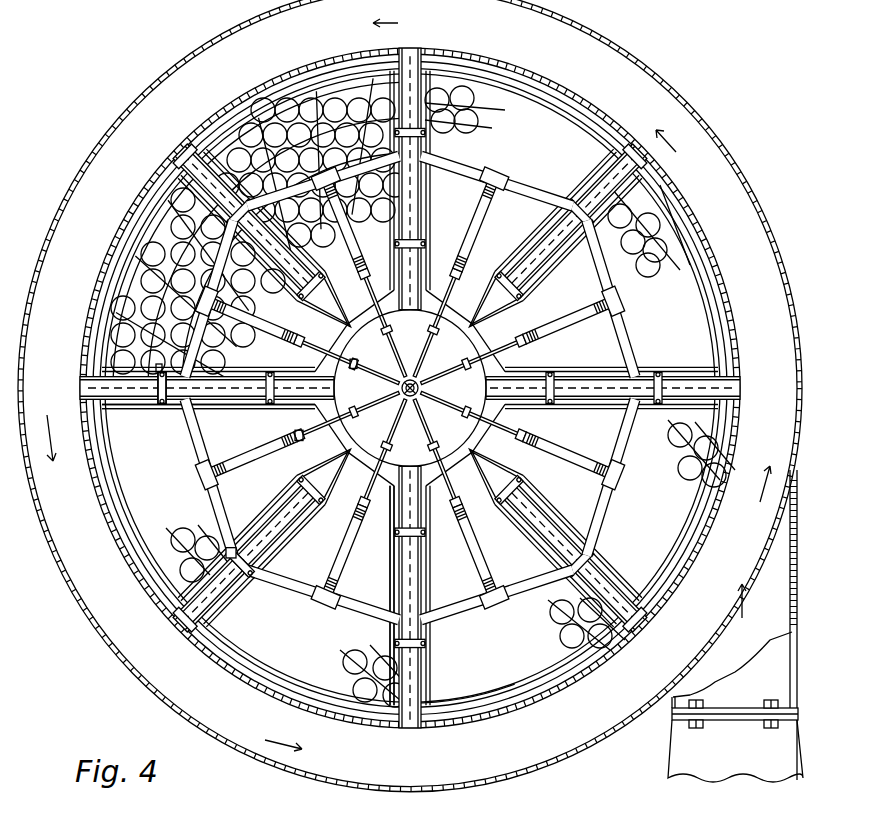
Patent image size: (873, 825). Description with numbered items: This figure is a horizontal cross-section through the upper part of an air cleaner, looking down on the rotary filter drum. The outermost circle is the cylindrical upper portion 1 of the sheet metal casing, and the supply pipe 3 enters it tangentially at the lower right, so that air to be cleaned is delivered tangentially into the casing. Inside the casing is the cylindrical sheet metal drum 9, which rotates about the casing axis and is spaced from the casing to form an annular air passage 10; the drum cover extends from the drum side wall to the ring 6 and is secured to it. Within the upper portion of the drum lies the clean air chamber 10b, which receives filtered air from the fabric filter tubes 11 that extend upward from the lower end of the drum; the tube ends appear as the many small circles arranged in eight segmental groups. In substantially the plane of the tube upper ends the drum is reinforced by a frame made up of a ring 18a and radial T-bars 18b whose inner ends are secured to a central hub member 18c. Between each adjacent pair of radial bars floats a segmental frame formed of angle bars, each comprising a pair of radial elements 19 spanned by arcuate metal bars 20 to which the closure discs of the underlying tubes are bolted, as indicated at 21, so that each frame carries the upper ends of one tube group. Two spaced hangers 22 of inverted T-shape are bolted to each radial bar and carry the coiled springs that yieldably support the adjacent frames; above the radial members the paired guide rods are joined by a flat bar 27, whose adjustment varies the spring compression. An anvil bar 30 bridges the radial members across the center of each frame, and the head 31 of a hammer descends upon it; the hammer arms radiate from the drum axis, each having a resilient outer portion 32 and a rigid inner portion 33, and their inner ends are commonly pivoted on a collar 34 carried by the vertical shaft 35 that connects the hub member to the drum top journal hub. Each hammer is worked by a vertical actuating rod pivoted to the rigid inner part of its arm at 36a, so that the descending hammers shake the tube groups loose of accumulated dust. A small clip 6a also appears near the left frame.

The cylindrical upper portion of casing 1 is at (124, 674).
The supply pipe 3 is at (735, 626).
The ring 6 is at (160, 414).
The clip 6a is at (155, 361).
The cylindrical sheet metal drum 9 is at (128, 226).
The annular air passage 10 is at (404, 387).
The clean air chamber 10b is at (528, 670).
The fabric filter tubes 11 is at (124, 342).
The ring 18a is at (262, 100).
The T-bars 18b is at (231, 399).
The hub member 18c is at (360, 560).
The radial elements 19 is at (131, 381).
The arcuate metal bars 20 is at (160, 206).
The bolts 21 is at (140, 233).
The hangers 22 is at (153, 412).
The flat bar 27 is at (241, 590).
The anvil bar 30 is at (226, 514).
The hammer head 31 is at (338, 607).
The resilient outer portion of hammer arm 32 is at (270, 459).
The rigid inner portion of hammer arm 33 is at (300, 441).
The collar 34 is at (430, 389).
The vertical shaft 35 is at (407, 413).
The pivot connection 36a is at (349, 364).